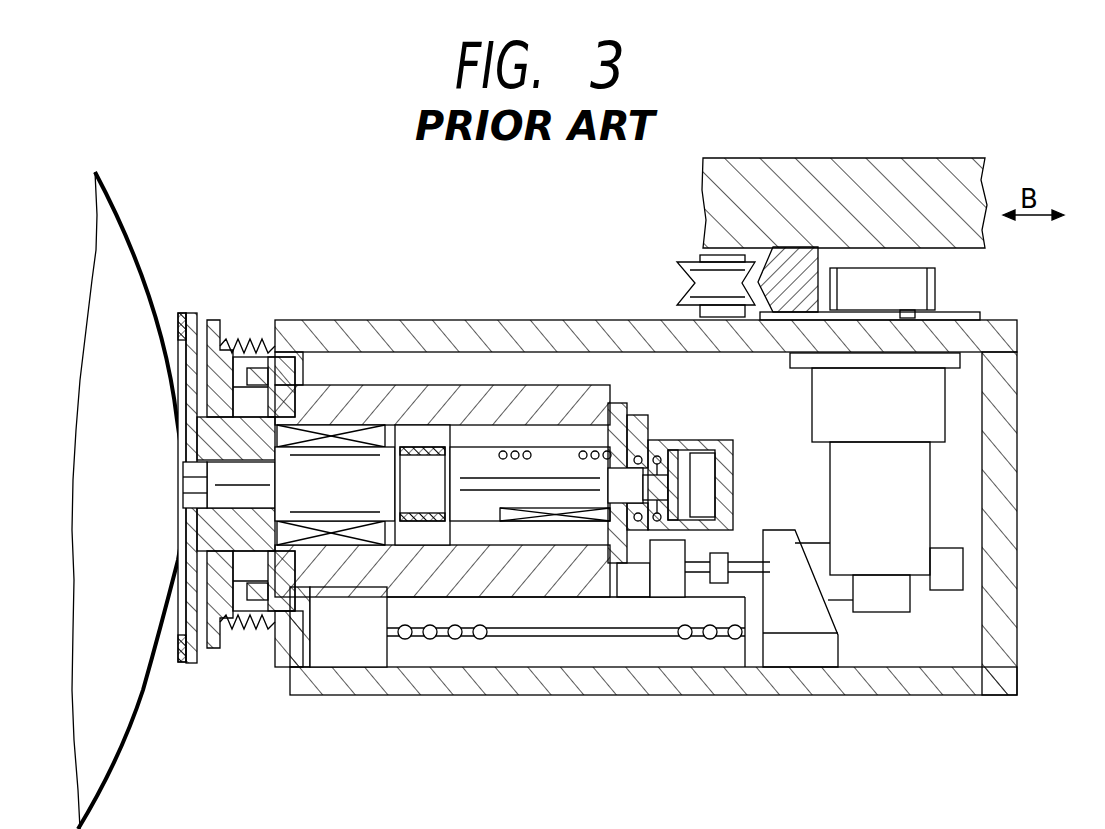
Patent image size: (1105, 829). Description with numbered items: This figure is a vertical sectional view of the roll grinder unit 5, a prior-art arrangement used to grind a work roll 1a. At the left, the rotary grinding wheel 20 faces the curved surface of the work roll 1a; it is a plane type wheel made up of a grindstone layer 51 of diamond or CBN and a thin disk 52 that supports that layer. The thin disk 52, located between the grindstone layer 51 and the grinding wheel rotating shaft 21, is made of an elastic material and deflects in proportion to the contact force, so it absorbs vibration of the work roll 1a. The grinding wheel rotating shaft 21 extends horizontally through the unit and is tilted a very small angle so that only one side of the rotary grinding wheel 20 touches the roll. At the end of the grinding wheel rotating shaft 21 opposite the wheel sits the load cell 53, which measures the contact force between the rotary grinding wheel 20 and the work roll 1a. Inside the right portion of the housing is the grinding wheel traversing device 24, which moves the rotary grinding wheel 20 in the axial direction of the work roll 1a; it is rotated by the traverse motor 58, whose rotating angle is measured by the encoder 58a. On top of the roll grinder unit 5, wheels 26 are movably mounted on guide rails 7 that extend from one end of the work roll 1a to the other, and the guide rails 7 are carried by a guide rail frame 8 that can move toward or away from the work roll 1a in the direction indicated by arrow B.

The work roll 1a is at (100, 743).
The grindstone layer 51 is at (178, 313).
The thin disk 52 is at (203, 322).
The rotary grinding wheel 20 is at (198, 670).
The roll grinder unit 5 is at (1045, 702).
The grinding wheel rotating shaft 21 is at (552, 470).
The load cell 53 is at (690, 480).
The traverse motor 58 is at (900, 505).
The encoder 58a is at (885, 598).
The grinding wheel traversing device 24 is at (958, 456).
The wheels 26 is at (688, 258).
The guide rails 7 is at (790, 262).
The guide rail frame 8 is at (905, 185).